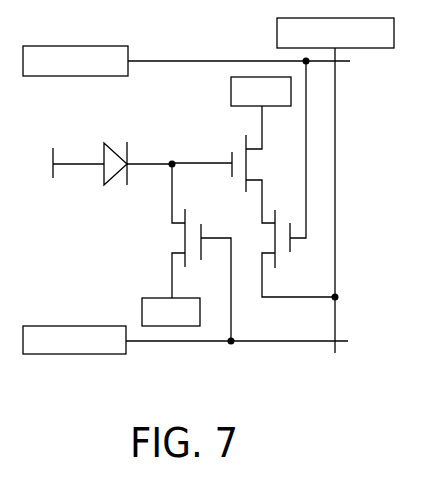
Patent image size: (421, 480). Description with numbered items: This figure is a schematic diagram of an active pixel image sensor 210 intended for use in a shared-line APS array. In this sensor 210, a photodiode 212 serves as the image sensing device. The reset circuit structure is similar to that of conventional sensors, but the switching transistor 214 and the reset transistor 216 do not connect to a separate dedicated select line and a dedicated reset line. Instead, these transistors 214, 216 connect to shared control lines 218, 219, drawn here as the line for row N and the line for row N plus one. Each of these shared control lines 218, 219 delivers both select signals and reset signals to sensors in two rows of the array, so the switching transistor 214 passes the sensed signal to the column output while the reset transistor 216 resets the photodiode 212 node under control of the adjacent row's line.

The image sensor 210 is at (208, 226).
The photodiode 212 is at (105, 186).
The switching transistor 214 is at (290, 251).
The reset transistor 216 is at (175, 238).
The shared control line 218 is at (153, 61).
The shared control line 219 is at (152, 341).